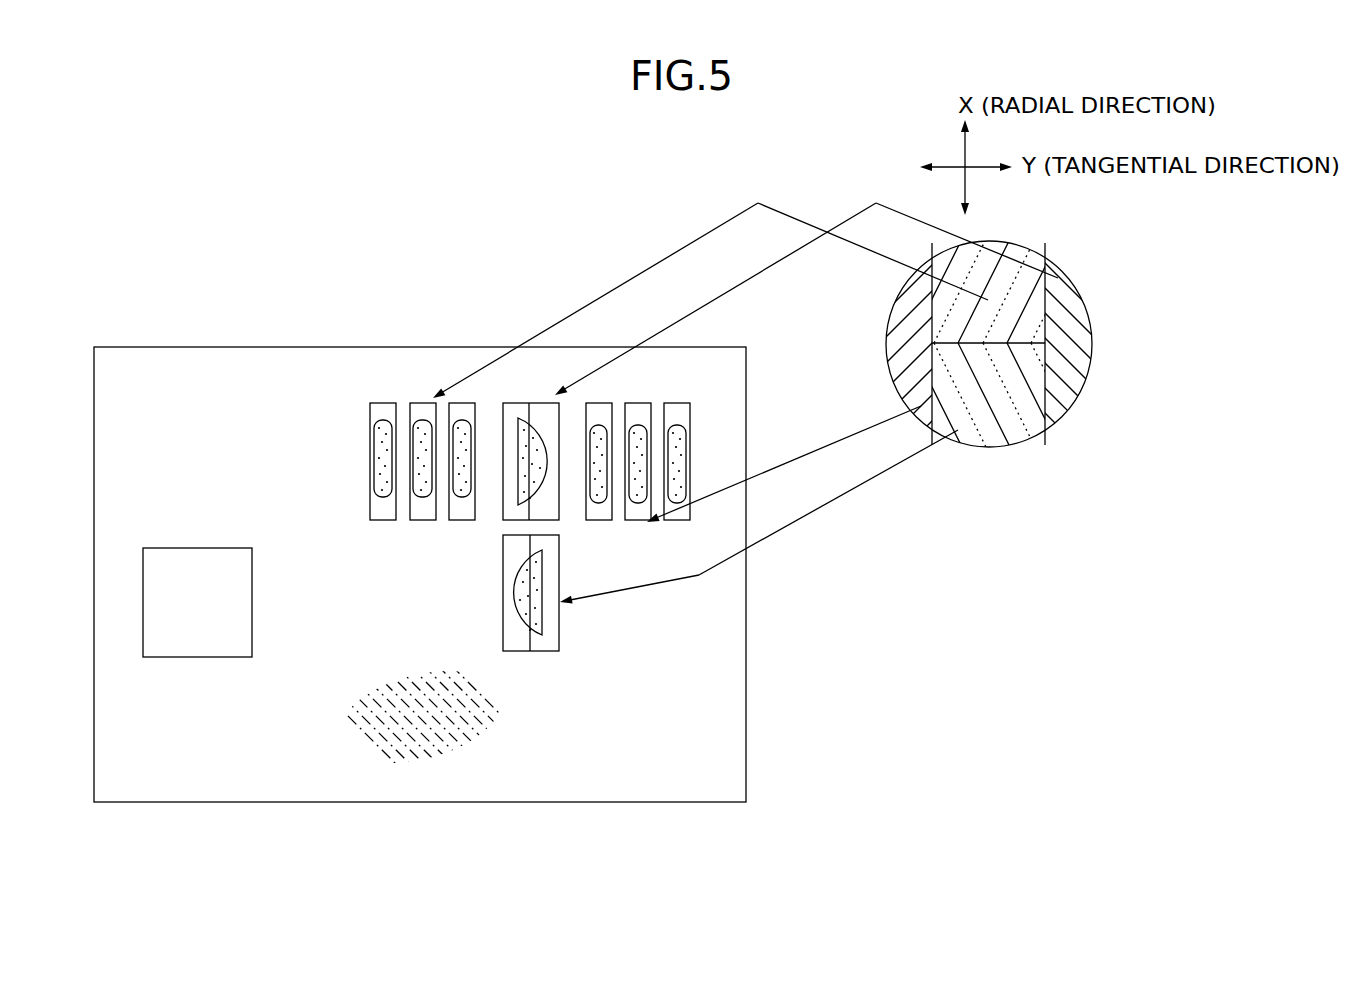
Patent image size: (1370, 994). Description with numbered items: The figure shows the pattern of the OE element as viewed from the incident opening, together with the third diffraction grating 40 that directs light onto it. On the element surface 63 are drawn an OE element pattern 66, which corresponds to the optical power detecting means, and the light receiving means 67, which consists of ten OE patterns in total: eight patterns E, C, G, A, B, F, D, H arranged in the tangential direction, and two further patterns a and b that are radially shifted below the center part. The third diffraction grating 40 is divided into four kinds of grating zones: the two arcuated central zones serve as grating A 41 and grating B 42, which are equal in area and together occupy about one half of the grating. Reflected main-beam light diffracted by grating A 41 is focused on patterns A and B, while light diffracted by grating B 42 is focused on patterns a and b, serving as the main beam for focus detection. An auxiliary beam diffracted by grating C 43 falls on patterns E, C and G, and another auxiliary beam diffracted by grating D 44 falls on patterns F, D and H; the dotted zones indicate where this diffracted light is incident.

The third diffraction grating 40 is at (991, 395).
The grating A 41 is at (1092, 337).
The grating B 42 is at (888, 337).
The grating C 43 is at (1013, 440).
The grating D 44 is at (1033, 258).
The photodetector 63 is at (420, 537).
The OE element pattern 66 is at (197, 547).
The light receiving means 67 is at (300, 353).